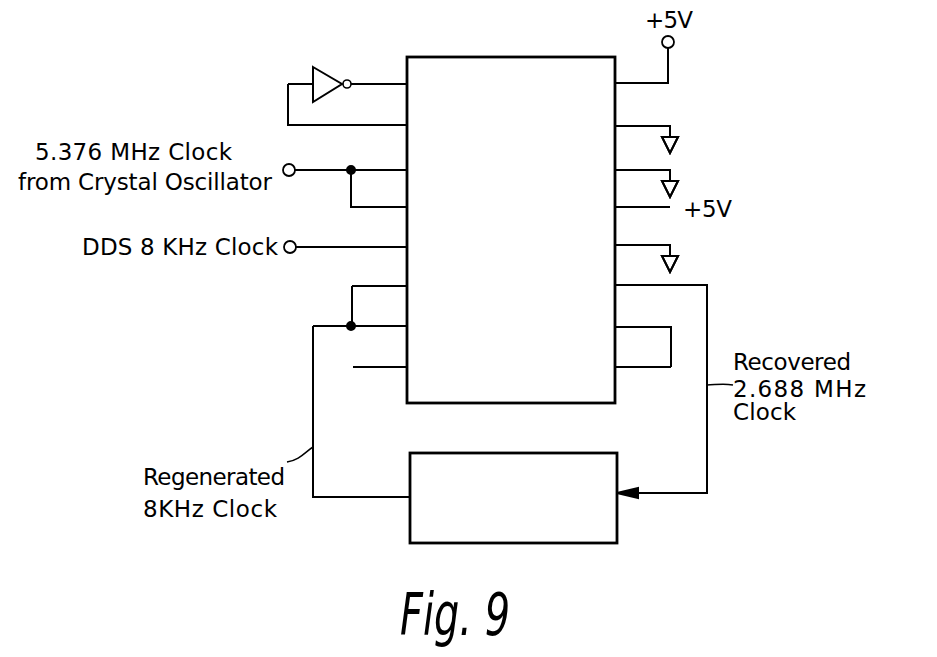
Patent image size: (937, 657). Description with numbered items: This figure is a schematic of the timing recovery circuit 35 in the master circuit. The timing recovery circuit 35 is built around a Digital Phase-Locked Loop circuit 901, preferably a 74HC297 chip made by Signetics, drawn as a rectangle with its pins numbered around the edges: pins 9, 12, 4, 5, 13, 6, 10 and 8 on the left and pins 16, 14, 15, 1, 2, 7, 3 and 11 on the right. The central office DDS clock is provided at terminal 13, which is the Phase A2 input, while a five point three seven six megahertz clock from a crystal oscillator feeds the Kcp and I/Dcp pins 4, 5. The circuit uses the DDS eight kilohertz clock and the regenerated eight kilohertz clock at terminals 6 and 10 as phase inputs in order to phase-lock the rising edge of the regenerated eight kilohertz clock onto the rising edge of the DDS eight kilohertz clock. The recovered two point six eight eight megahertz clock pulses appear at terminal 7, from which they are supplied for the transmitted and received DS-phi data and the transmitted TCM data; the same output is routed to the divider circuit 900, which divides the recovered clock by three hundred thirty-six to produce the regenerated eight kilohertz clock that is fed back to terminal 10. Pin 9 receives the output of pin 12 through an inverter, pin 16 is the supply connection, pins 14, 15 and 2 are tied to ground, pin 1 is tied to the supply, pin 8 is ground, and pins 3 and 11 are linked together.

The Digital Phase-Locked Loop circuit 901 is at (495, 57).
The divider circuit 900 is at (617, 523).
The timing recovery circuit 35 is at (708, 119).
The pin 9 Phase A1 input 9 is at (347, 79).
The pin 12 ECPDout output 12 is at (347, 105).
The pin 4 Kcp input 4 is at (345, 158).
The pin 5 I/Dcp input 5 is at (379, 188).
The terminal 13 is at (345, 235).
The terminal 6 is at (379, 291).
The terminal 10 is at (360, 314).
The pin 8 GND 8 is at (380, 352).
The pin 16 Vcc 16 is at (644, 59).
The pin 14 D input 14 is at (646, 125).
The pin 15 C input 15 is at (646, 169).
The pin 1 B input 1 is at (642, 192).
The pin 2 A input 2 is at (646, 246).
The terminal 7 is at (661, 377).
The pin 3 ENctr 3 is at (643, 332).
The pin 11 XORPDout output 11 is at (643, 352).